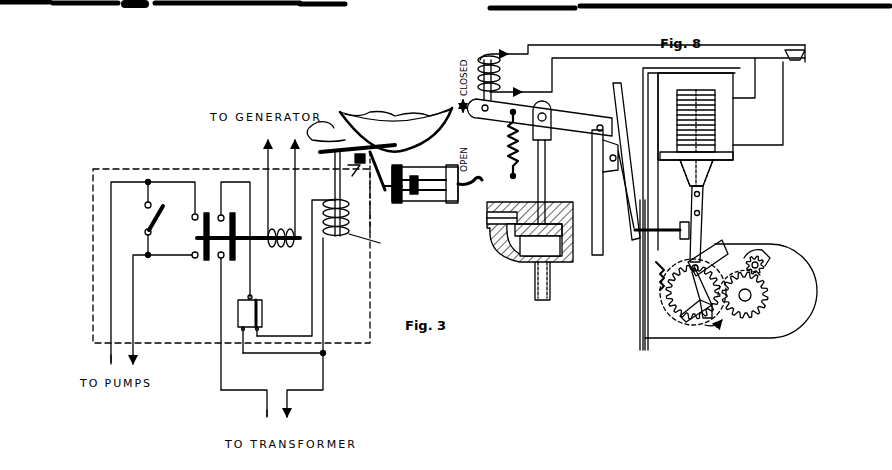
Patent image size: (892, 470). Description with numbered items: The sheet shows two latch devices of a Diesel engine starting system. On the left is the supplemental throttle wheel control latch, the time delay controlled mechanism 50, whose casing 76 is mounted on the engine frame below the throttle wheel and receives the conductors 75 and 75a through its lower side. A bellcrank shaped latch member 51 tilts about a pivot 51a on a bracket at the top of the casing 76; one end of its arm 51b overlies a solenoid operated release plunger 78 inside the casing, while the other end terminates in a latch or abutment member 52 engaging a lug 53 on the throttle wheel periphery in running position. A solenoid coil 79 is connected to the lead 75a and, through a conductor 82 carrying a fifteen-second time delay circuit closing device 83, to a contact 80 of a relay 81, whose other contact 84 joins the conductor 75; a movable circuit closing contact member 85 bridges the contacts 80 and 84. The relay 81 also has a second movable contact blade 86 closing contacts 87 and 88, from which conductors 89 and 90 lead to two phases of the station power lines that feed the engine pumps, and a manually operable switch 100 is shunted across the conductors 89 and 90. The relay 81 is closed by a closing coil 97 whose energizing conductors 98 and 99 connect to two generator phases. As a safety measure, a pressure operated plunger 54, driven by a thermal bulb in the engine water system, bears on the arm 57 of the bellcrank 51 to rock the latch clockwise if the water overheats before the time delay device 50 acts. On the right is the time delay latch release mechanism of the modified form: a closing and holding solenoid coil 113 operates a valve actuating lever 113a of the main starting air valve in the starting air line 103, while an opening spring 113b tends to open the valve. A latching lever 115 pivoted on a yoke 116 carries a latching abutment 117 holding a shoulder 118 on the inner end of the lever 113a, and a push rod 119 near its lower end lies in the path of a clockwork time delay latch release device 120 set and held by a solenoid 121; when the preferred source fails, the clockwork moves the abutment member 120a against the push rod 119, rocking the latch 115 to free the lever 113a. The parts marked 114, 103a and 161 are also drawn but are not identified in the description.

In FIG. 3, the time delay controlled mechanism 50 is at (90, 232).
In FIG. 3, the casing 76 is at (93, 180).
In FIG. 3, the manually operable switch 100 is at (152, 216).
In FIG. 3, the conductor 89 is at (140, 236).
In FIG. 3, the conductor 90 is at (109, 359).
In FIG. 3, the relay 81 is at (194, 233).
In FIG. 3, the contact 88 is at (198, 213).
In FIG. 3, the contact 87 is at (193, 259).
In FIG. 3, the second movable contact blade 86 is at (200, 266).
In FIG. 3, the contact 84 is at (210, 262).
In FIG. 3, the contact 80 is at (224, 213).
In FIG. 3, the movable circuit closing contact member 85 is at (234, 258).
In FIG. 3, the conductor 82 is at (251, 273).
In FIG. 3, the fifteen-second time delay circuit closing device 83 is at (262, 313).
In FIG. 3, the closing coil 97 is at (284, 220).
In FIG. 3, the energizing conductor 98 is at (266, 144).
In FIG. 3, the energizing conductor 99 is at (294, 142).
In FIG. 3, the solenoid operated release plunger 78 is at (334, 186).
In FIG. 3, the solenoid coil 79 is at (361, 226).
In FIG. 3, the bellcrank shaped latch member 51 is at (355, 146).
In FIG. 3, the pivot 51a is at (355, 192).
In FIG. 3, the arm 51b is at (345, 125).
In FIG. 3, the latch or abutment member 52 is at (392, 140).
In FIG. 3, the lug 53 is at (414, 140).
In FIG. 3, the arm 57 is at (383, 192).
In FIG. 3, the pressure operated plunger 54 is at (412, 196).
In FIG. 3, the conductor 75 is at (250, 390).
In FIG. 3, the conductor 75a is at (324, 377).
In FIG. 8, the closing and holding solenoid coil 113 is at (502, 76).
In FIG. 8, the valve actuating lever 113a is at (576, 112).
In FIG. 8, the opening spring 113b is at (487, 112).
In FIG. 8, the valve stem 114 is at (546, 163).
In FIG. 8, the yoke 116 is at (594, 176).
In FIG. 8, the latching abutment 117 is at (630, 118).
In FIG. 8, the shoulder 118 is at (602, 105).
In FIG. 8, the latching lever 115 is at (605, 235).
In FIG. 8, the starting air line 103 is at (545, 296).
In FIG. 8, the valve body 103a is at (488, 222).
In FIG. 8, the push rod 119 is at (680, 228).
In FIG. 8, the time delay latch release device 120 is at (706, 206).
In FIG. 8, the abutment member 120a is at (728, 245).
In FIG. 8, the solenoid 121 is at (706, 128).
In FIG. 8, the fuse 161 is at (800, 42).